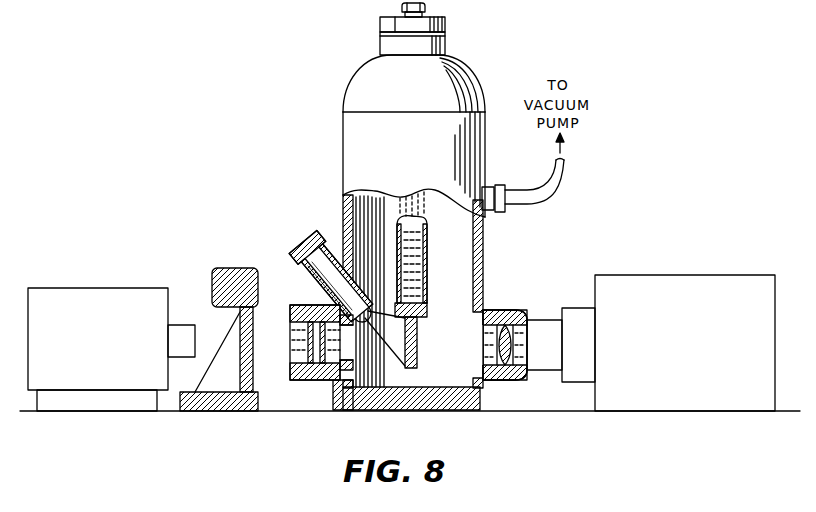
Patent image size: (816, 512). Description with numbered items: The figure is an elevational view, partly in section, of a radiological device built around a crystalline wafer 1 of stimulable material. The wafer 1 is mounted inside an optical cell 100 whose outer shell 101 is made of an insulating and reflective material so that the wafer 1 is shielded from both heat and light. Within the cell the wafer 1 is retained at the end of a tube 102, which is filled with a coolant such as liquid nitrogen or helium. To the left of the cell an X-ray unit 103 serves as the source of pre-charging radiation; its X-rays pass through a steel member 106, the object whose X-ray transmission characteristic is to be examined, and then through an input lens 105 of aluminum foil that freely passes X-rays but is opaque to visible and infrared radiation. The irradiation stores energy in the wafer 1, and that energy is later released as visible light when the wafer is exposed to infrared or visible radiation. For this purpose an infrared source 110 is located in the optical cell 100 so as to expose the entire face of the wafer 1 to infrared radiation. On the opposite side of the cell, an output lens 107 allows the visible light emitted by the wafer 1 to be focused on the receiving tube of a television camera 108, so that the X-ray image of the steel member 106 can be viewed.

The crystalline wafer 1 is at (418, 358).
The optical cell 100 is at (352, 78).
The outer shell 101 is at (343, 156).
The tube 102 is at (428, 283).
The X-ray unit 103 is at (97, 288).
The input lens 105 is at (310, 352).
The steel member 106 is at (231, 268).
The output lens 107 is at (510, 378).
The television camera 108 is at (648, 275).
The infrared source 110 is at (297, 245).